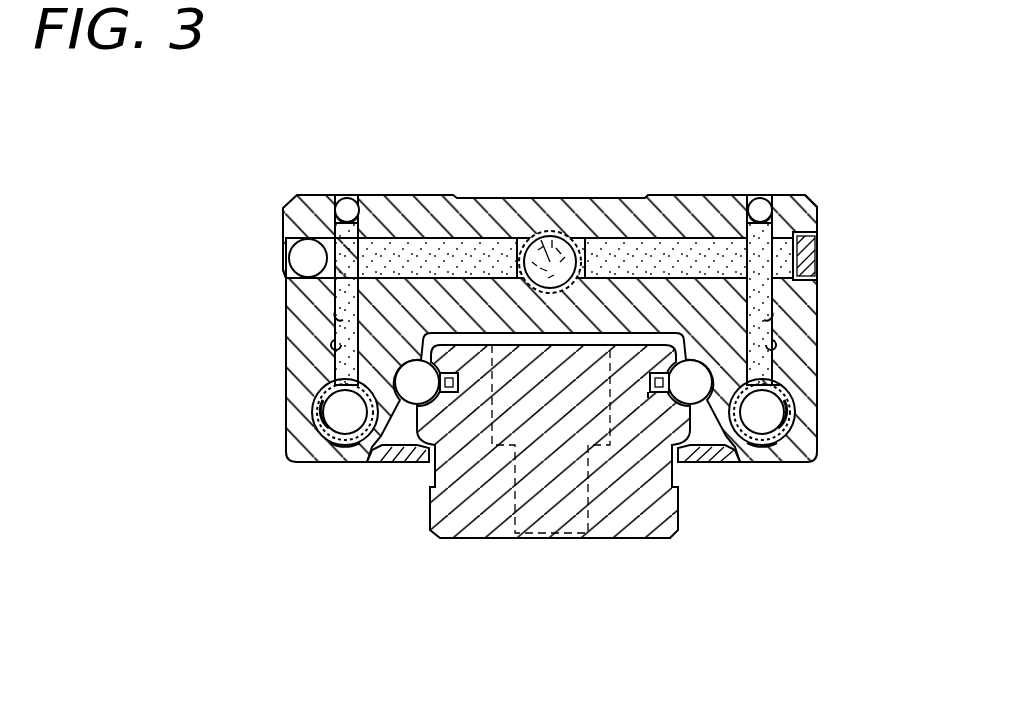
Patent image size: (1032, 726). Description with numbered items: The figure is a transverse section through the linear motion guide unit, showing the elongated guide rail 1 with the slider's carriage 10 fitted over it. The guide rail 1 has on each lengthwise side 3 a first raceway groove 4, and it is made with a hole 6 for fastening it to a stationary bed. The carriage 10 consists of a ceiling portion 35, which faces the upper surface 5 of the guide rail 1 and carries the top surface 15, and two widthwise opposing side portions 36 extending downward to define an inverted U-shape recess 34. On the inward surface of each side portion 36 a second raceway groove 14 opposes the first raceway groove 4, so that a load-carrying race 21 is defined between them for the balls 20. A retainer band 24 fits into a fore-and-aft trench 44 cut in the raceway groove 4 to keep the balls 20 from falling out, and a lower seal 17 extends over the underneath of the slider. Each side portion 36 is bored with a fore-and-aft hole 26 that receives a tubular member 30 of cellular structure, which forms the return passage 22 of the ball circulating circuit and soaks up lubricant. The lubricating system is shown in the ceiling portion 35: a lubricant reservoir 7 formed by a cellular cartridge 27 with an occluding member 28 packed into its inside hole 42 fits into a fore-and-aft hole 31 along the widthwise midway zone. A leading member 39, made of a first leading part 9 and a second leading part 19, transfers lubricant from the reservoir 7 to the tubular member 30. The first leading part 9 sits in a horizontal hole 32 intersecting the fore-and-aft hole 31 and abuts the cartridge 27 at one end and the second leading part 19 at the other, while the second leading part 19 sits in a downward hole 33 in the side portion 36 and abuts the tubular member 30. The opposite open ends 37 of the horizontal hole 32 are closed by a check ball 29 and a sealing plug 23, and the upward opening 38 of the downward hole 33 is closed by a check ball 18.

The guide rail 1 is at (688, 445).
The lengthwise side 3 is at (432, 488).
The first raceway groove 4 is at (686, 356).
The upper surface 5 is at (560, 538).
The hole 6 is at (500, 445).
The lubricant reservoir 7 is at (578, 240).
The first leading part 9 is at (662, 252).
The carriage 10 is at (627, 215).
The second raceway groove 14 is at (373, 215).
The top surface 15 is at (402, 195).
The lower seal 17 is at (410, 462).
The check ball 18 is at (345, 198).
The second leading part 19 is at (336, 315).
The ball 20 is at (782, 373).
The load-carrying race 21 is at (372, 462).
The return passage 22 is at (330, 398).
The sealing plug 23 is at (812, 255).
The retainer band 24 is at (450, 394).
The fore-and-aft hole 26 is at (350, 446).
The cartridge 27 is at (522, 236).
The occluding member 28 is at (550, 232).
The check ball 29 is at (298, 257).
The tubular member 30 is at (315, 420).
The fore-and-aft hole 31 is at (541, 240).
The horizontal hole 32 is at (420, 255).
The downward hole 33 is at (333, 333).
The inverted U-shape recess 34 is at (603, 327).
The ceiling portion 35 is at (482, 198).
The side portion 36 is at (285, 350).
The open end 37 is at (807, 240).
The upward opening 38 is at (350, 198).
The leading member 39 is at (806, 200).
The inside hole 42 is at (562, 232).
The fore-and-aft trench 44 is at (645, 398).